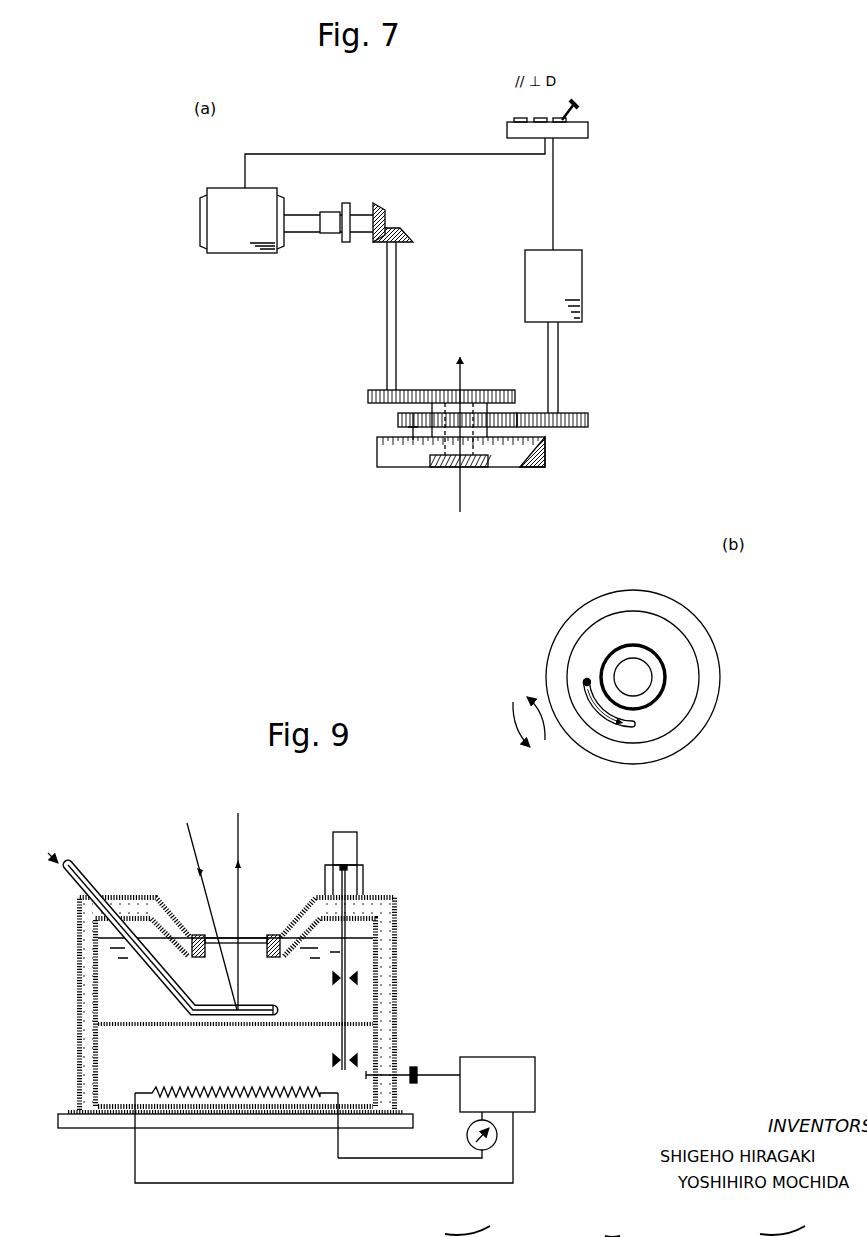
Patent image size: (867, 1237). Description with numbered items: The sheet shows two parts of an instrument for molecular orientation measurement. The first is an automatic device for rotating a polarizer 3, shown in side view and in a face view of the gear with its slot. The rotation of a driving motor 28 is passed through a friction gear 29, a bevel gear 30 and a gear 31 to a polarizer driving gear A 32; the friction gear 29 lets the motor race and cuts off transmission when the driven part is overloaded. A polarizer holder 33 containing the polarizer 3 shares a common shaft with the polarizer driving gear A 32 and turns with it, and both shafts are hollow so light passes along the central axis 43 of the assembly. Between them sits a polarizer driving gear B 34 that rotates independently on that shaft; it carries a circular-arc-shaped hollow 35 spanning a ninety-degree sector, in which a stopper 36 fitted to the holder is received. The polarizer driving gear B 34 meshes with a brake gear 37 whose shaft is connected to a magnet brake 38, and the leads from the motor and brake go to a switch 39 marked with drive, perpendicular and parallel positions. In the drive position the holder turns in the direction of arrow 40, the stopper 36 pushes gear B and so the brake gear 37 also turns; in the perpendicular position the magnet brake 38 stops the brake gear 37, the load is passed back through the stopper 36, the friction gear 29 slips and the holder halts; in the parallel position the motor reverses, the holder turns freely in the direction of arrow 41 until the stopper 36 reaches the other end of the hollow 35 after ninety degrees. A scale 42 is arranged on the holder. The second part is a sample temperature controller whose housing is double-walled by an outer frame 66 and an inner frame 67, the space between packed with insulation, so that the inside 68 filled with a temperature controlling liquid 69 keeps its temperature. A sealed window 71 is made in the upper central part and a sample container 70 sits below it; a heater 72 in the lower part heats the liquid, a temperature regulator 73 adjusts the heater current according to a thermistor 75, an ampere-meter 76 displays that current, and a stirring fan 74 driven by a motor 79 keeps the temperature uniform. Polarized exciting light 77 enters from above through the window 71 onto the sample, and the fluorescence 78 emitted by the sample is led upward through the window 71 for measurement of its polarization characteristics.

In FIG. 7, the polarizer 3 is at (474, 470).
In FIG. 7, the driving motor 28 is at (240, 250).
In FIG. 7, the friction gear 29 is at (333, 236).
In FIG. 7, the bevel gear 30 is at (378, 244).
In FIG. 7, the gear 31 is at (368, 393).
In FIG. 7, the polarizer driving gear A 32 is at (492, 390).
In FIG. 7, the polarizer holder 33 is at (503, 468).
In FIG. 7, the polarizer driving gear B 34 is at (508, 413).
In FIG. 7, the circular-arc-shaped hollow 35 is at (632, 727).
In FIG. 7, the stopper 36 is at (410, 434).
In FIG. 7, the brake gear 37 is at (578, 413).
In FIG. 7, the magnet brake 38 is at (582, 286).
In FIG. 7, the switch 39 is at (588, 130).
In FIG. 7, the arrow 40 is at (545, 740).
In FIG. 7, the arrow 41 is at (512, 702).
In FIG. 7, the scale 42 is at (542, 446).
In FIG. 7, the axis 43 is at (443, 400).
In FIG. 9, the outer frame 66 is at (397, 900).
In FIG. 9, the inner frame 67 is at (377, 942).
In FIG. 9, the inside 68 is at (353, 922).
In FIG. 9, the temperature controlling liquid 69 is at (365, 987).
In FIG. 9, the sample container 70 is at (78, 860).
In FIG. 9, the window 71 is at (252, 935).
In FIG. 9, the heater 72 is at (233, 1097).
In FIG. 9, the temperature regulator 73 is at (500, 1057).
In FIG. 9, the stirring fan 74 is at (347, 1053).
In FIG. 9, the thermistor 75 is at (416, 1066).
In FIG. 9, the ampere-meter 76 is at (467, 1135).
In FIG. 9, the incident light 77 is at (190, 836).
In FIG. 9, the fluorescence 78 is at (240, 845).
In FIG. 9, the motor 79 is at (360, 838).